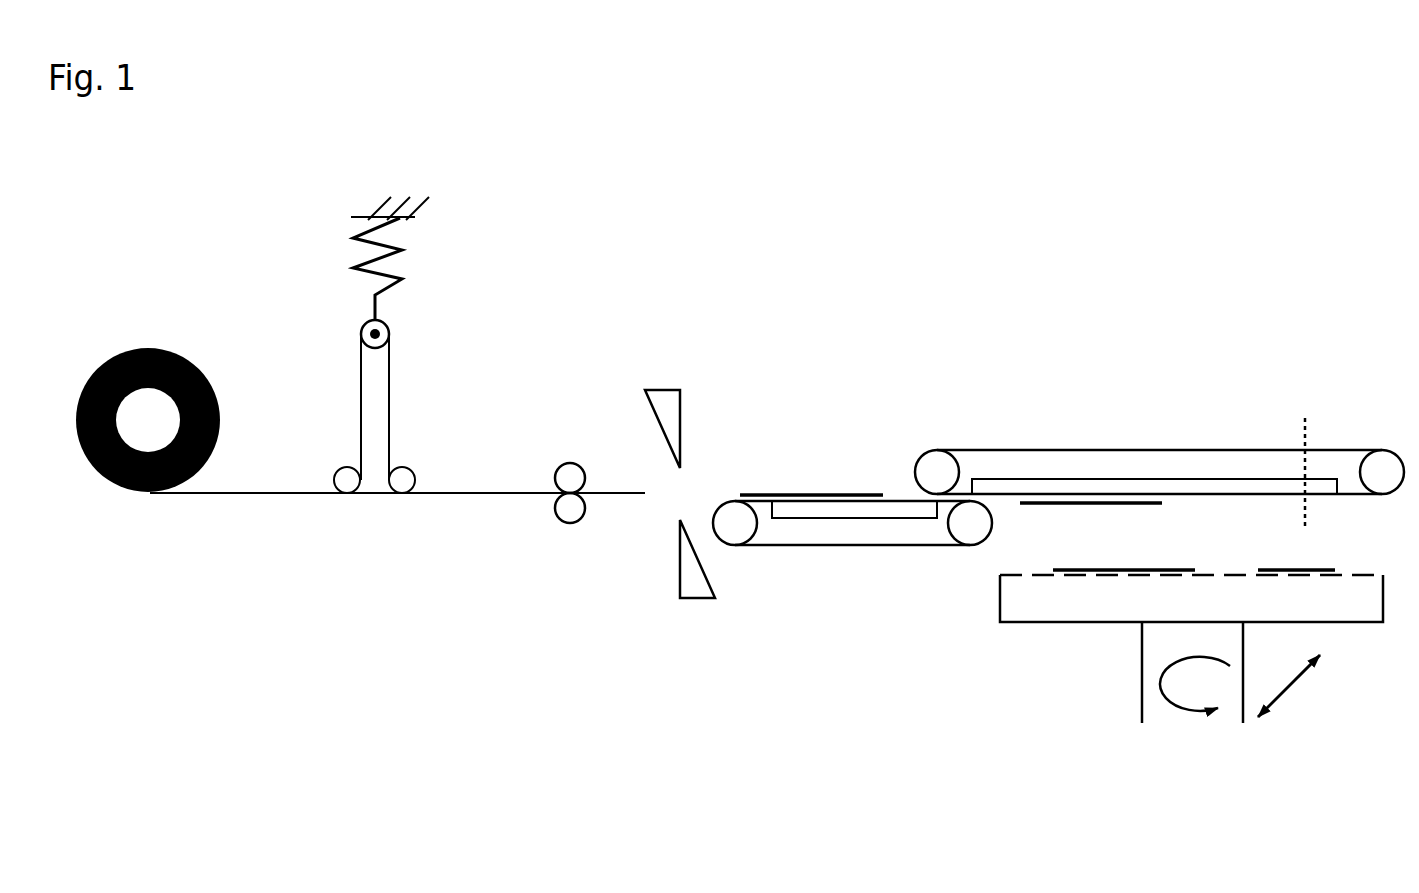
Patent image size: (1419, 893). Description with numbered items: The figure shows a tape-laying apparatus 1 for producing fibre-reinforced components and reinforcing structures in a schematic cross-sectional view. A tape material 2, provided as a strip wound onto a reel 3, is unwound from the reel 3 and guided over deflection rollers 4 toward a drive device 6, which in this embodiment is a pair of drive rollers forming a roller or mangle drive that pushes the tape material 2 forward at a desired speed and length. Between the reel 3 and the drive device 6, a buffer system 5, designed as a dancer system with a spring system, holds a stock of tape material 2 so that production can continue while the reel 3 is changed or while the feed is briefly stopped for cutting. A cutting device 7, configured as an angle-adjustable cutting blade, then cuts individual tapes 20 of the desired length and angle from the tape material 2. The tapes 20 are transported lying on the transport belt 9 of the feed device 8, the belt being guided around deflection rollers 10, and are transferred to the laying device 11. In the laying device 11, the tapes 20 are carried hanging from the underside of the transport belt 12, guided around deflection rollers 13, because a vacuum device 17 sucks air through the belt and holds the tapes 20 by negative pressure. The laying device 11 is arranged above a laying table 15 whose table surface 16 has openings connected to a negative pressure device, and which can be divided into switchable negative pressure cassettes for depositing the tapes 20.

The tape-laying apparatus 1 is at (519, 622).
The tape material 2 is at (264, 497).
The reel 3 is at (168, 355).
The deflection rollers 4 is at (338, 470).
The buffer system 5 is at (398, 273).
The drive device 6 is at (565, 450).
The cutting device 7 is at (673, 378).
The feed device 8 is at (852, 603).
The transport belt 9 is at (915, 548).
The deflection rollers 10 is at (733, 523).
The laying device 11 is at (1167, 397).
The transport belt 12 is at (1015, 450).
The deflection rollers 13 is at (1382, 472).
The laying table 15 is at (1340, 647).
The table surface 16 is at (1010, 572).
The vacuum device 17 is at (1213, 479).
The tapes 20 is at (805, 493).